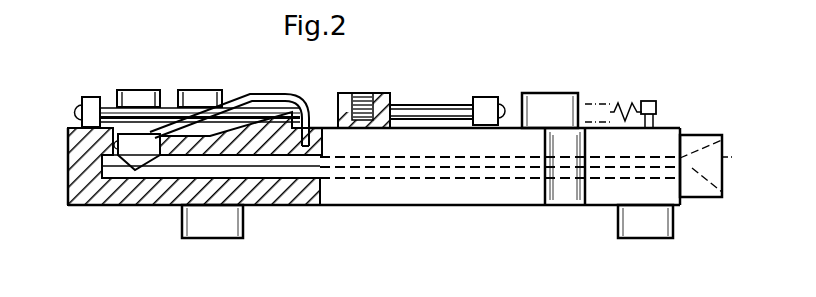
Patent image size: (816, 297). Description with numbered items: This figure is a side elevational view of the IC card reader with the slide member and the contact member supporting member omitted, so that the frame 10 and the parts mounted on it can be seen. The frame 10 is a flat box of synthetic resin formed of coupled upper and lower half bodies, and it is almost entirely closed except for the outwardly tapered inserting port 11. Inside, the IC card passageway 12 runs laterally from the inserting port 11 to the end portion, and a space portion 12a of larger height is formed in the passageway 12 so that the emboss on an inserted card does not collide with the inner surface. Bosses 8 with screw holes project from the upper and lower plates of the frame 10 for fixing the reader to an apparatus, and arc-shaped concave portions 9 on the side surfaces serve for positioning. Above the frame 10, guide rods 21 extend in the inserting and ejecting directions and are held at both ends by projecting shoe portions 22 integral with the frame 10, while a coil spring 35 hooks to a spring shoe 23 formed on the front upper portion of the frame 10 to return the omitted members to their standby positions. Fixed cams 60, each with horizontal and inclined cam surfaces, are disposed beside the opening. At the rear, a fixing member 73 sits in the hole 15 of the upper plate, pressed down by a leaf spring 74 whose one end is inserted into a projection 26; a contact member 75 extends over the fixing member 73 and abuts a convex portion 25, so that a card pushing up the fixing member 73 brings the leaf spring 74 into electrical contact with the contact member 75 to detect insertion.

The boss 8 is at (157, 95).
The arc-shaped concave portion 9 is at (568, 194).
The frame 10 is at (472, 192).
The inserting port 11 is at (721, 166).
The IC card passageway 12 is at (290, 168).
The space portion 12a is at (518, 176).
The hole 15 is at (117, 147).
The guide rod 21 is at (430, 106).
The shoe portion 22 is at (90, 100).
The spring shoe 23 is at (656, 106).
The convex portion 25 is at (97, 107).
The projection 26 is at (312, 106).
The coil spring 35 is at (620, 108).
The fixed cam 60 is at (309, 82).
The fixing member 73 is at (140, 160).
The leaf spring 74 is at (205, 104).
The contact member 75 is at (130, 104).